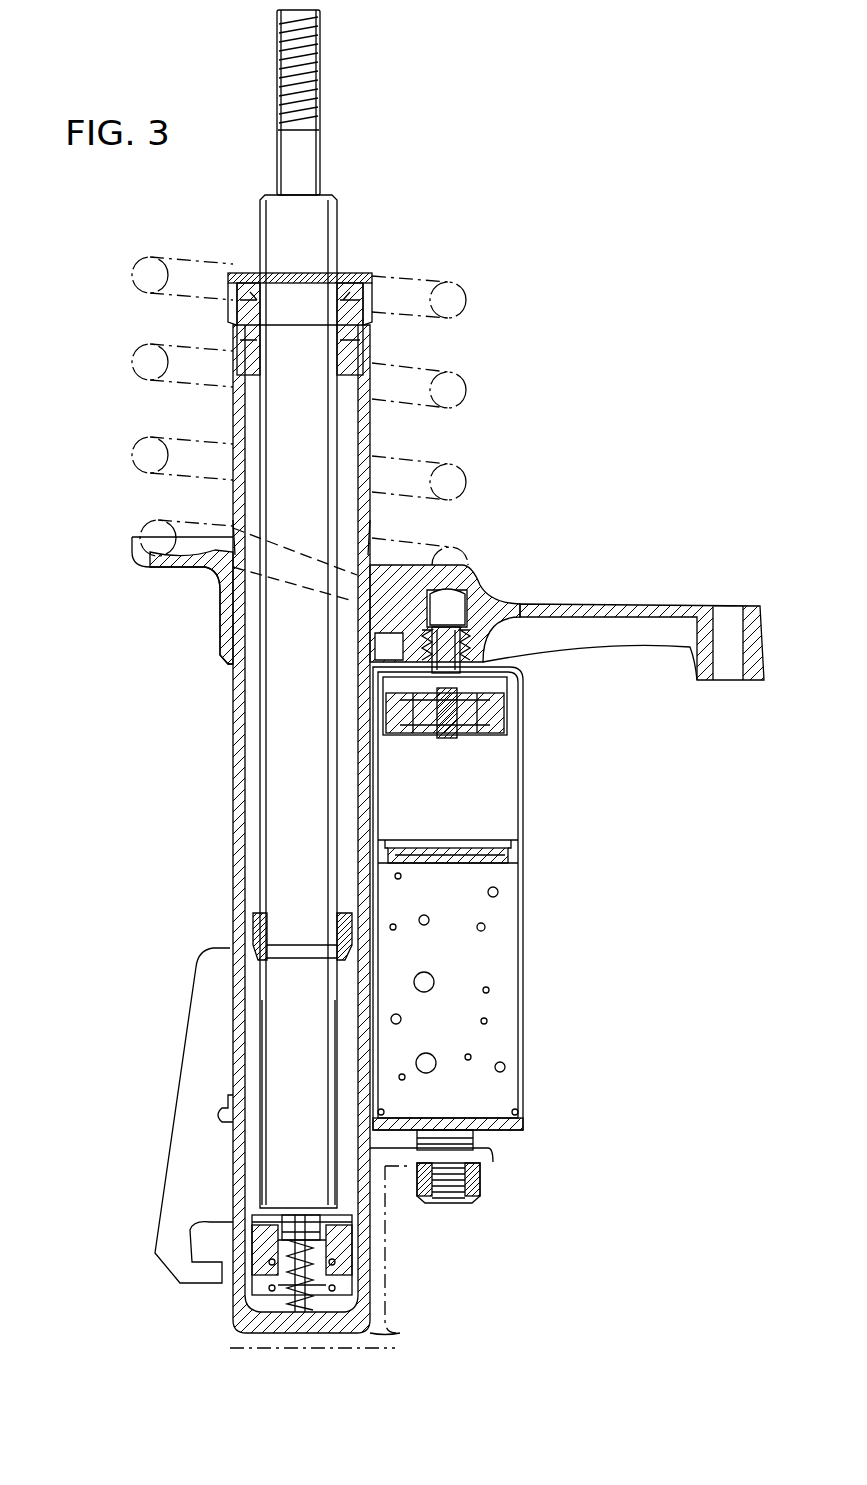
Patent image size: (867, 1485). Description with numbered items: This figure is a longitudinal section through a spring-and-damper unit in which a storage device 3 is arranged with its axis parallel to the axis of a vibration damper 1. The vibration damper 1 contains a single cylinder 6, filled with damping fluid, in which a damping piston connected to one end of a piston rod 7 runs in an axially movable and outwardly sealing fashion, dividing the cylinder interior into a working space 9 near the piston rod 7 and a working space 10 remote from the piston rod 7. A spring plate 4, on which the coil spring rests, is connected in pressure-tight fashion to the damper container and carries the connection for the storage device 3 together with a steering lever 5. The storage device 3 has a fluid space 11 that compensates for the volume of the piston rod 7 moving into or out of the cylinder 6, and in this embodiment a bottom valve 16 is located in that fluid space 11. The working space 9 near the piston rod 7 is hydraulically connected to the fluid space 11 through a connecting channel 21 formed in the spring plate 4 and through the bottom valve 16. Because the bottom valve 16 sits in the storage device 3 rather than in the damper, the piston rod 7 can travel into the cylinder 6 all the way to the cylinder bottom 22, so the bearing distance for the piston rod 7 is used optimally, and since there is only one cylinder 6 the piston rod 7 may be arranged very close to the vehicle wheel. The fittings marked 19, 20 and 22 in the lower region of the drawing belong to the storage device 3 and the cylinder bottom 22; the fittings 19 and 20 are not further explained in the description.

The vibration damper 1 is at (222, 678).
The storage device 3 is at (540, 866).
The spring plate 4 is at (185, 572).
The steering lever 5 is at (703, 610).
The cylinder 6 is at (237, 815).
The piston rod 7 is at (290, 777).
The working space near the piston rod 9 is at (255, 737).
The working space remote from the piston rod 10 is at (255, 1297).
The fluid space 11 is at (488, 783).
The bottom valve 16 is at (510, 717).
The screw plug 19 is at (482, 1178).
The connecting line 20 is at (378, 1274).
The connecting channel 21 is at (455, 607).
The cylinder bottom 22 is at (395, 1337).